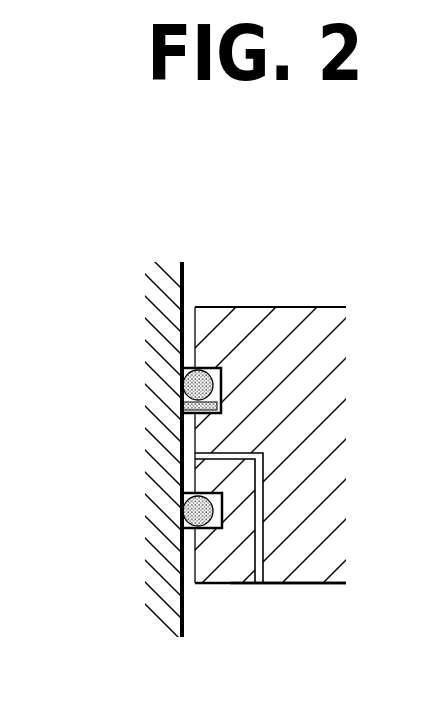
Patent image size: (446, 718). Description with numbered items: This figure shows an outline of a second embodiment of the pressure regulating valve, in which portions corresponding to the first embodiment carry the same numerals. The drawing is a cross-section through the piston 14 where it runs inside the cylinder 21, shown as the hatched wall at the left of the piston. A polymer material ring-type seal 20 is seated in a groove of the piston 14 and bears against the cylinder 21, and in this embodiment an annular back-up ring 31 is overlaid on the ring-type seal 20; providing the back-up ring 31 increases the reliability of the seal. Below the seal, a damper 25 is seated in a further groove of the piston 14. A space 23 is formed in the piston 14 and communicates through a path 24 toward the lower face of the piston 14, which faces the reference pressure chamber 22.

The piston 14 is at (298, 310).
The cylinder 21 is at (150, 325).
The ring-type seal 20 is at (181, 387).
The back-up ring 31 is at (182, 404).
The space 23 is at (192, 459).
The damper 25 is at (180, 510).
The path 24 is at (258, 538).
The reference pressure chamber 22 is at (267, 602).